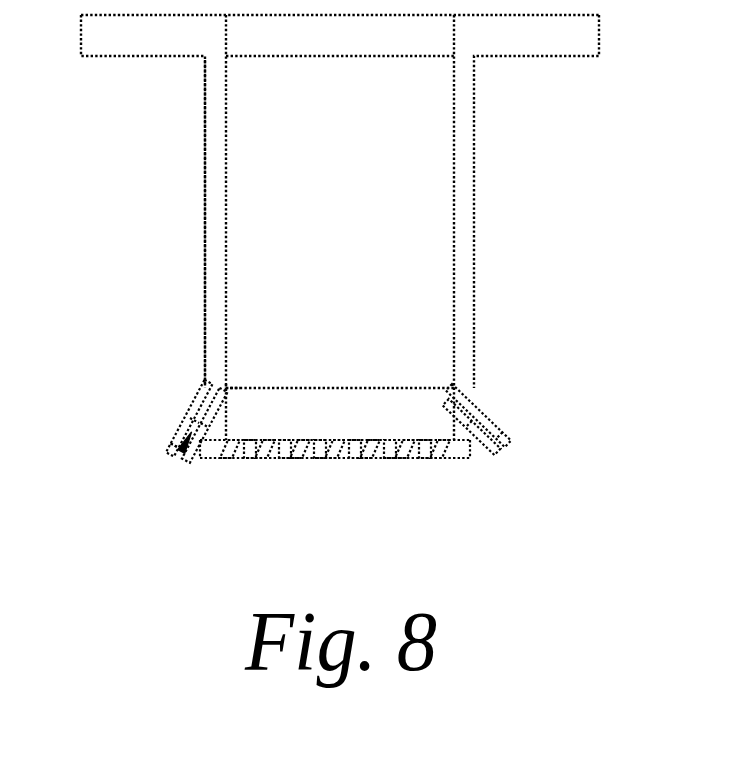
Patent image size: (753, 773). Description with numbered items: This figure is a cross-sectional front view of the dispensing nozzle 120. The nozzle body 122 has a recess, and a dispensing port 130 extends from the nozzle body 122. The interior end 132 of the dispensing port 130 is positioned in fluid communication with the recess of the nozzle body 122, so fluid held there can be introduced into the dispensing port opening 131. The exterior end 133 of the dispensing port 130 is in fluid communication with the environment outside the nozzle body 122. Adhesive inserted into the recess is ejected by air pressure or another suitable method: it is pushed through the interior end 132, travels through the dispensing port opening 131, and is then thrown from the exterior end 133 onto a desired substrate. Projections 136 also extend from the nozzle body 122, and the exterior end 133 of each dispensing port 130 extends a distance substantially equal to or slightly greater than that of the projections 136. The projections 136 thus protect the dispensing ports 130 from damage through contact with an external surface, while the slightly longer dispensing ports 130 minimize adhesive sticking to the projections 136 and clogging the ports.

The dispensing nozzle 120 is at (562, 394).
The nozzle body 122 is at (205, 198).
The dispensing port 130 is at (200, 388).
The dispensing port opening 131 is at (172, 460).
The interior end 132 is at (256, 356).
The exterior end 133 is at (162, 428).
The projection 136 is at (211, 458).